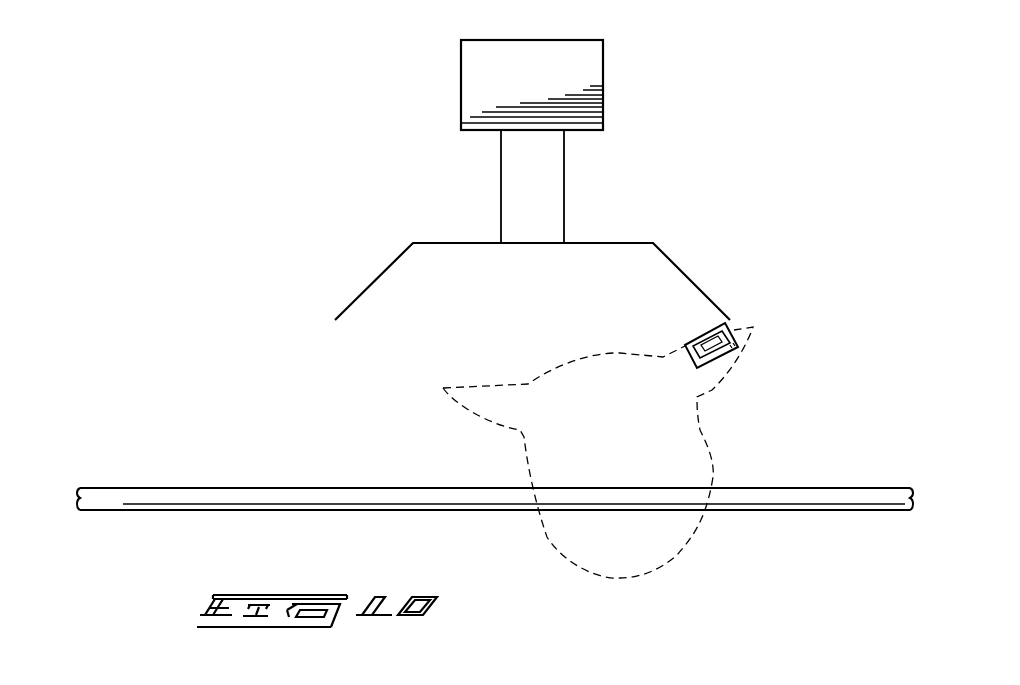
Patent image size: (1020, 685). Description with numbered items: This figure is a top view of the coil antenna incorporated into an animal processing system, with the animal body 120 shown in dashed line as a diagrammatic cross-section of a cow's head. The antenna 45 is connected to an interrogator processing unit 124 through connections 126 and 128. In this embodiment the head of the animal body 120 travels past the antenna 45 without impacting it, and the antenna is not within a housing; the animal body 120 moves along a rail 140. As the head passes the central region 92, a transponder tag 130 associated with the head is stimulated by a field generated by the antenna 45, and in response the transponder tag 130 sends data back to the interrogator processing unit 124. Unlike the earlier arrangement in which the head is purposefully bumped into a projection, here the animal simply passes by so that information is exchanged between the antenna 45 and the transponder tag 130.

The interrogator processing unit 124 is at (488, 82).
The connection 126 is at (500, 181).
The connection 128 is at (566, 178).
The antenna 45 is at (427, 250).
The recessed central portion 92 is at (531, 270).
The transponder tag 130 is at (694, 342).
The animal body 120 is at (677, 555).
The rail 140 is at (757, 512).